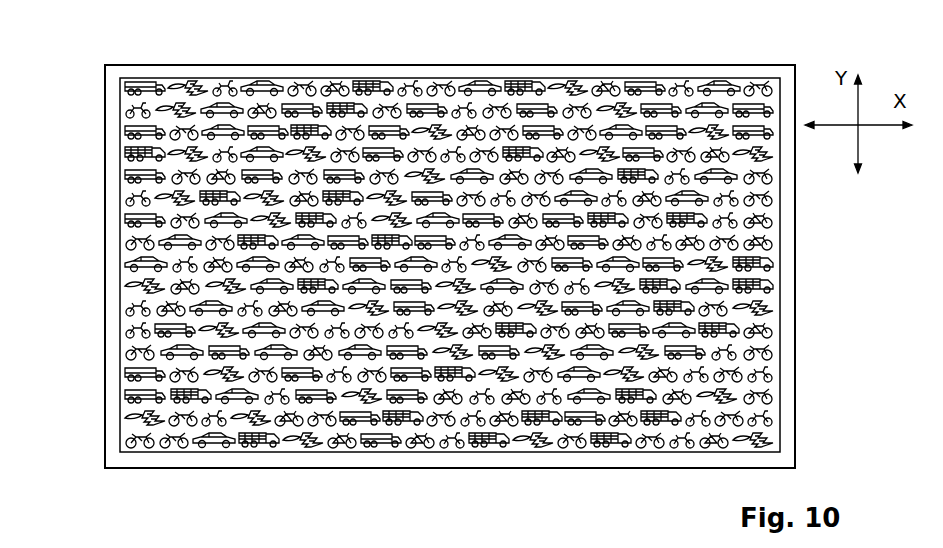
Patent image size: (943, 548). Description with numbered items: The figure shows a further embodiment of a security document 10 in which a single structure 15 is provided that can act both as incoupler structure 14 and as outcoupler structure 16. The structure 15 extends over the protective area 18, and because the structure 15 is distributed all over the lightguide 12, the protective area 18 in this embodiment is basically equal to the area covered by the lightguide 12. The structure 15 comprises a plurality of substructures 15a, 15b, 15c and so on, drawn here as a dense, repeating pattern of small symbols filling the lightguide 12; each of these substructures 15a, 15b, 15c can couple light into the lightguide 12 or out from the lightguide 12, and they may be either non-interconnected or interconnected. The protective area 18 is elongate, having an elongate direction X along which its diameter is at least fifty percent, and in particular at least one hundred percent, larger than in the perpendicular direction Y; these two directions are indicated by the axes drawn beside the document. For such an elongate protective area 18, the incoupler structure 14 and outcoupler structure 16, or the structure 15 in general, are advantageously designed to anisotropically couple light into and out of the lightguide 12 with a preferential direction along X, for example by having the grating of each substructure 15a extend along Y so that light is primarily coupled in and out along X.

The display device 10 is at (610, 65).
The lightguide 12 is at (437, 82).
The incoupler structure 14 is at (123, 50).
The structure 15 is at (188, 88).
The outcoupler structure 16 is at (185, 82).
The protective area 18 is at (405, 50).
The substructure 15a is at (202, 447).
The substructure 15b is at (302, 447).
The substructure 15c is at (418, 447).